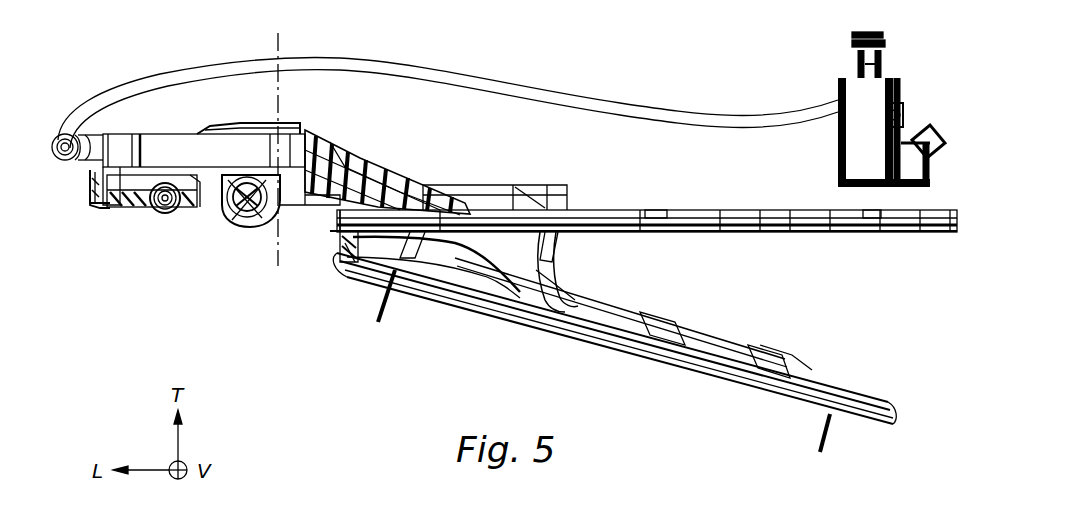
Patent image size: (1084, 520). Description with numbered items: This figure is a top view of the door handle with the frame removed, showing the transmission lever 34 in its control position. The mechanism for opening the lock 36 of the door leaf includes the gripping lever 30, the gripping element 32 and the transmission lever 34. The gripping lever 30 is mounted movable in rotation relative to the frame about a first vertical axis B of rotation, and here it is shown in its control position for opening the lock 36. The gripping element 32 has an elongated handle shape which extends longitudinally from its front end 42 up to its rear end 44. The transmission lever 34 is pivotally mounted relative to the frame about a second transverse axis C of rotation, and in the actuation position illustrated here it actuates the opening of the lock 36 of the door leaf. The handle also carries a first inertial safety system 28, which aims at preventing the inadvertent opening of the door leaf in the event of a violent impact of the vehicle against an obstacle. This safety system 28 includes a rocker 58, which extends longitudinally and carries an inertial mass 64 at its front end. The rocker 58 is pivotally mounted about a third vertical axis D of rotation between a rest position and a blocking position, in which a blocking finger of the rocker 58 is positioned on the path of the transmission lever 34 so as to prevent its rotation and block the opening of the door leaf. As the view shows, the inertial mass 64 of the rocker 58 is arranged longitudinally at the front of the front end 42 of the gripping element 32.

The first inertial safety system 28 is at (138, 237).
The gripping lever 30 is at (365, 148).
The gripping element 32 is at (613, 334).
The transmission lever 34 is at (181, 126).
The lock 36 is at (827, 66).
The front end 42 is at (345, 258).
The rear end 44 is at (895, 408).
The rocker 58 is at (166, 224).
The inertial mass 64 is at (110, 210).
The first vertical axis of rotation B is at (250, 232).
The second transverse axis of rotation C is at (282, 38).
The third vertical axis of rotation D is at (170, 210).